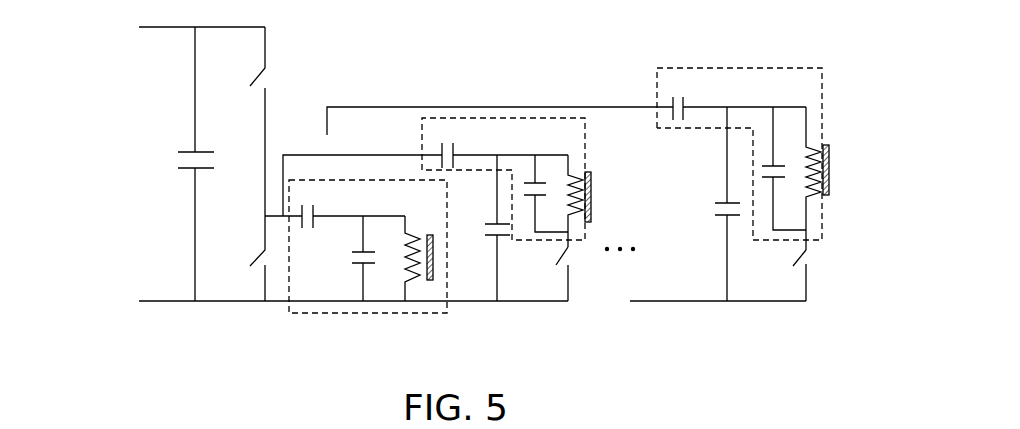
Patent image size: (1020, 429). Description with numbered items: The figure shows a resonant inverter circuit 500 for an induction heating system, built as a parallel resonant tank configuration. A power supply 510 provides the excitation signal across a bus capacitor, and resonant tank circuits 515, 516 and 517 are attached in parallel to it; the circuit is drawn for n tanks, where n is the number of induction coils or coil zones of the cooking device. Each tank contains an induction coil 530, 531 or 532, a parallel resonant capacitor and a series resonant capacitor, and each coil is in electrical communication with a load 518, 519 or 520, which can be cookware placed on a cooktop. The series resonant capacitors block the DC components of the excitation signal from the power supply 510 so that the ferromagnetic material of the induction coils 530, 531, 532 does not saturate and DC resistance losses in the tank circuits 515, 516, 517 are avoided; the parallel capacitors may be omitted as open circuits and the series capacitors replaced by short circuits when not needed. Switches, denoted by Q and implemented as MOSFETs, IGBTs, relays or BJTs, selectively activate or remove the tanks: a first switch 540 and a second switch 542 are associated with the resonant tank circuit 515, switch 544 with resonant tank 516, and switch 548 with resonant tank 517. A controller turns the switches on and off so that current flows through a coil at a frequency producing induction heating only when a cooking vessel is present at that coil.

The resonant inverter circuit 500 is at (742, 62).
The power supply 510 is at (127, 298).
The resonant tank circuit 515 is at (325, 319).
The resonant tank circuit 516 is at (545, 105).
The resonant tank circuit 517 is at (829, 78).
The load 518 is at (435, 253).
The load 519 is at (597, 182).
The load 520 is at (832, 172).
The induction coil 530 is at (418, 287).
The induction coil 531 is at (577, 230).
The induction coil 532 is at (805, 155).
The first switch 540 is at (269, 78).
The second switch 542 is at (251, 287).
The switch 544 is at (557, 270).
The switch 548 is at (789, 258).